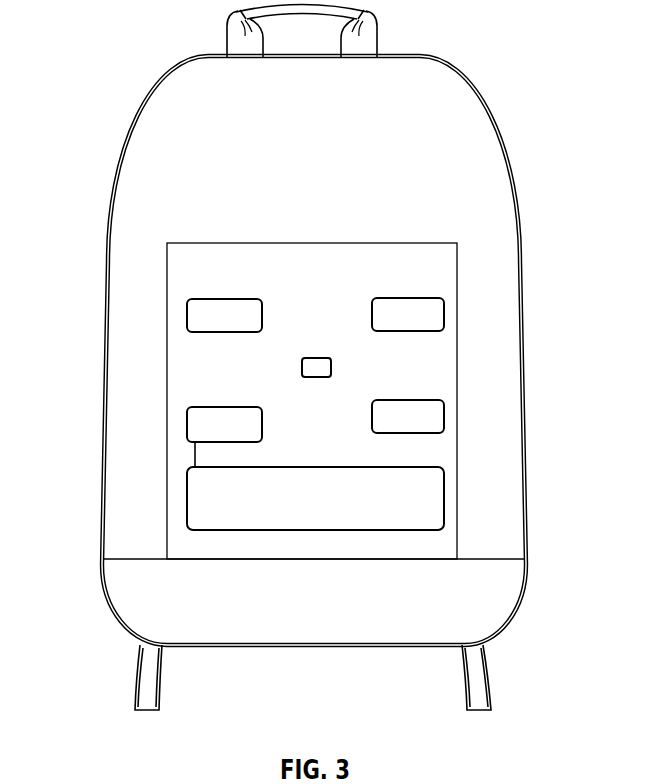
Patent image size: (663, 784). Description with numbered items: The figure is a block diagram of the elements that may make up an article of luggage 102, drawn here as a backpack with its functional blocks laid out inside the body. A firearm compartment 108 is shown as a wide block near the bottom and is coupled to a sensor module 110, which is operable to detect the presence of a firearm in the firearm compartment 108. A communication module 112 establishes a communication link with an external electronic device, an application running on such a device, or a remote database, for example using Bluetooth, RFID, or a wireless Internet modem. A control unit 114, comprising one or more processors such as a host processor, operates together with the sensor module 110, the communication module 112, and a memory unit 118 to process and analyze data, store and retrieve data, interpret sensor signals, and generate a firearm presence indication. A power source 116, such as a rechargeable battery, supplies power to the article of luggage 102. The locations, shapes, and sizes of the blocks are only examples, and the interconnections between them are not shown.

The article of luggage 102 is at (106, 296).
The firearm compartment 108 is at (444, 500).
The sensor module 110 is at (187, 425).
The communication module 112 is at (444, 417).
The control unit 114 is at (331, 366).
The power source 116 is at (187, 316).
The memory unit 118 is at (444, 318).